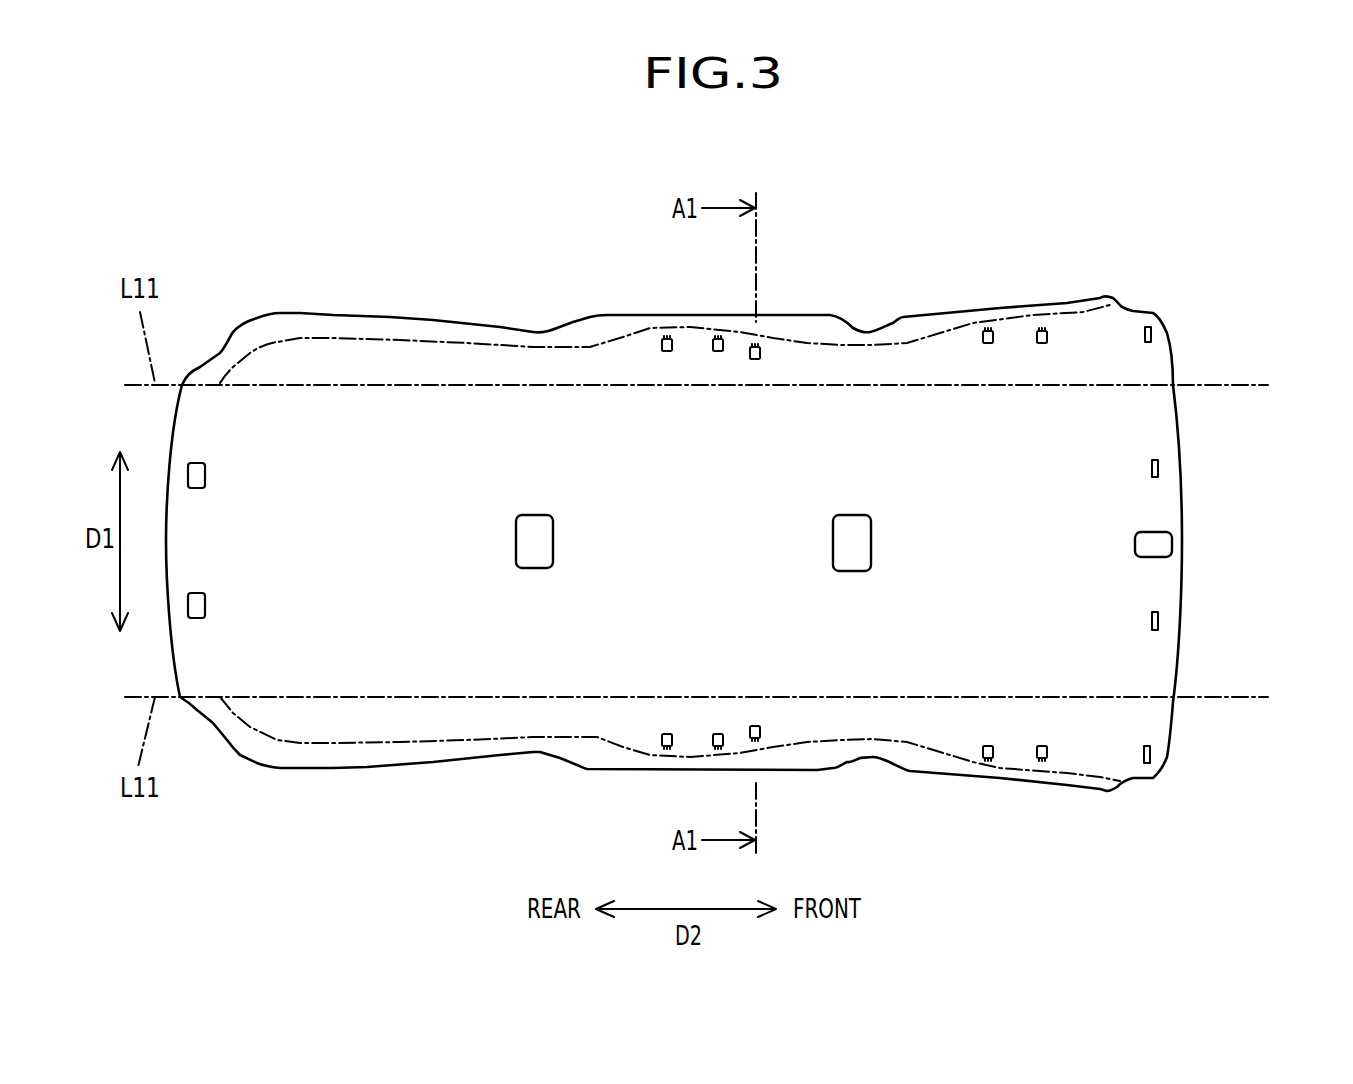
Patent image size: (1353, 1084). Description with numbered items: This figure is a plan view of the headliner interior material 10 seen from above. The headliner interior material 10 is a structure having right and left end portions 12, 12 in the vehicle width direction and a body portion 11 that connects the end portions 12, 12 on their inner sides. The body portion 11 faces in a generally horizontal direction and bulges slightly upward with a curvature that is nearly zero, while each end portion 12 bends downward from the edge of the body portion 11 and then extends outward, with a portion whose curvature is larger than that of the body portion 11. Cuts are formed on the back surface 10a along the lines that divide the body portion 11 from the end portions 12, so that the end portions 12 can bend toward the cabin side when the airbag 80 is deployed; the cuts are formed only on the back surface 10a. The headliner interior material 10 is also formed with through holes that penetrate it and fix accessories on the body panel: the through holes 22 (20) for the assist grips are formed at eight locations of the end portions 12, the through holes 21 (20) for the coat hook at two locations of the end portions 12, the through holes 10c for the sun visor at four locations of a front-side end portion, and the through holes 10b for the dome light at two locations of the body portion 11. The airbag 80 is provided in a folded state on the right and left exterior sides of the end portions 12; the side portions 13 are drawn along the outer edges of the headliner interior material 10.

The headliner interior material 10 is at (1202, 265).
The back surface 10a is at (194, 433).
The through hole 10b is at (847, 515).
The through hole 10c is at (1153, 334).
The body portion 11 is at (1270, 395).
The end portion 12 is at (1270, 280).
The side portion 13 is at (390, 317).
The through hole 20 is at (809, 541).
The through hole 21 is at (827, 793).
The through hole 22 is at (666, 340).
The airbag 80 is at (1103, 297).